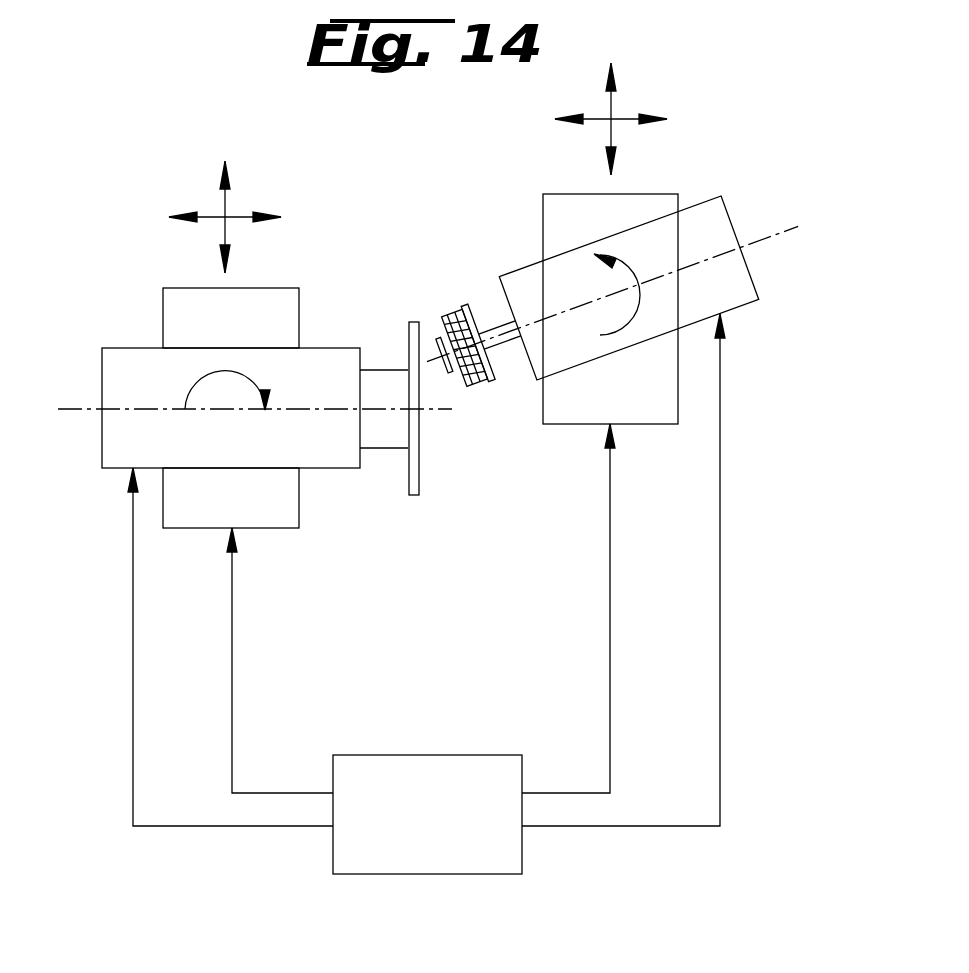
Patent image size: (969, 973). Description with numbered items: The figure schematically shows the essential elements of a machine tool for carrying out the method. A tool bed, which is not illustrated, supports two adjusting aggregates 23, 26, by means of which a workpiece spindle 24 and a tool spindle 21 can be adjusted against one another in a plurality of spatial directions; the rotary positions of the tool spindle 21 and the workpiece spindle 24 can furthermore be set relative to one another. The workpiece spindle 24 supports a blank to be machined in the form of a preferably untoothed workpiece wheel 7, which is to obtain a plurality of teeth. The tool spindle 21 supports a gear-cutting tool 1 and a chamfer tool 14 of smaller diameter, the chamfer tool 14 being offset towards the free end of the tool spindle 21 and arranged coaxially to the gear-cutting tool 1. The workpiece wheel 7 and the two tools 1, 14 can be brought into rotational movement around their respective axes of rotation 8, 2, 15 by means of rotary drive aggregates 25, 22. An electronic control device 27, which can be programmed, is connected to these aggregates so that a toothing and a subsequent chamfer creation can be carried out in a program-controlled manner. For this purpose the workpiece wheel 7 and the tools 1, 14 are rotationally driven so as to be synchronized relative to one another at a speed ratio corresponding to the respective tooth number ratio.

The gear-cutting tool 1 is at (449, 318).
The axis of rotation 2 is at (650, 293).
The axis of rotation 15 is at (772, 237).
The workpiece wheel 7 is at (415, 333).
The axis of rotation 8 is at (80, 408).
The chamfer tool 14 is at (437, 340).
The tool spindle 21 is at (538, 384).
The rotary drive aggregate 22 is at (705, 237).
The adjusting aggregate 23 is at (663, 372).
The workpiece spindle 24 is at (336, 472).
The rotary drive aggregate 25 is at (322, 362).
The adjusting aggregate 26 is at (265, 508).
The electronic control device 27 is at (437, 826).